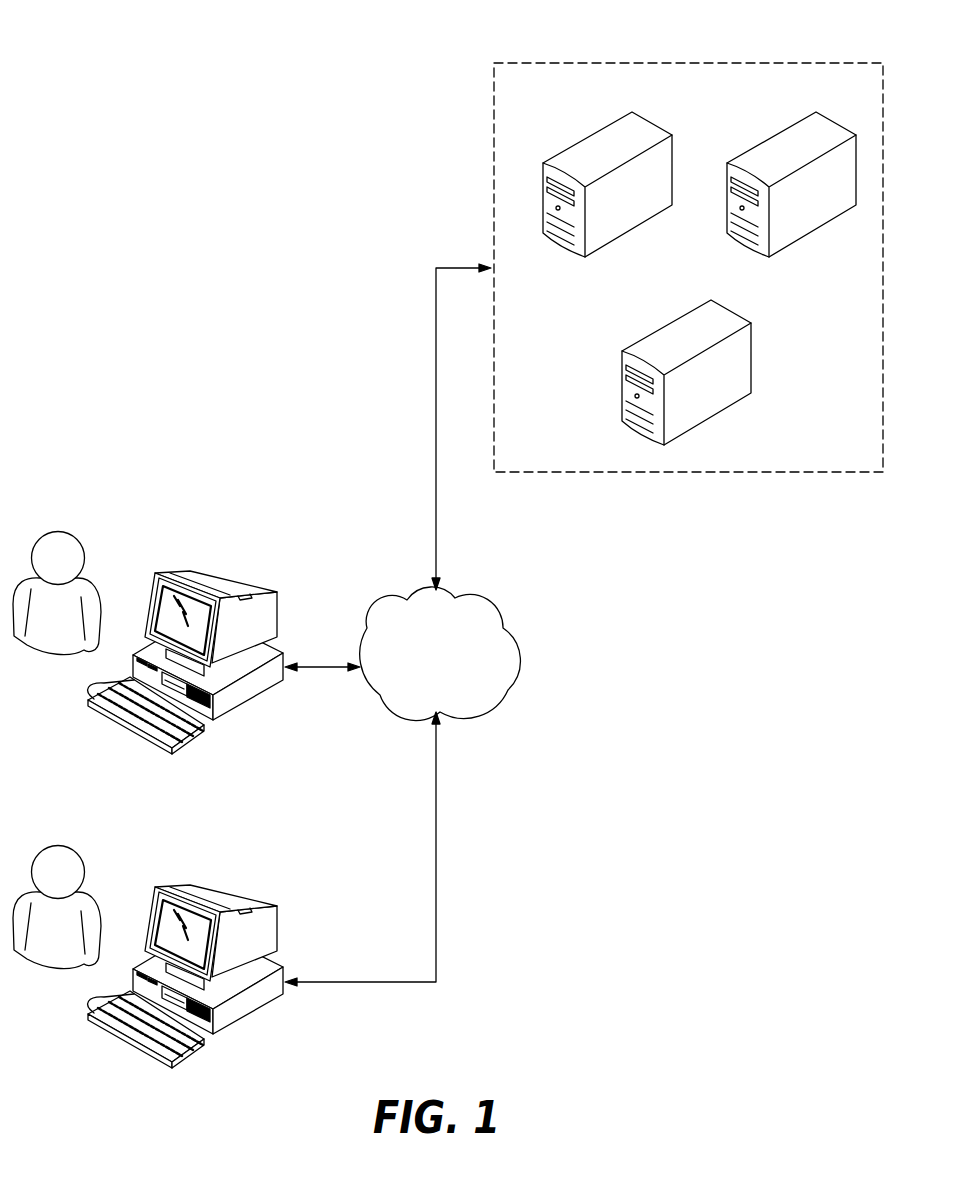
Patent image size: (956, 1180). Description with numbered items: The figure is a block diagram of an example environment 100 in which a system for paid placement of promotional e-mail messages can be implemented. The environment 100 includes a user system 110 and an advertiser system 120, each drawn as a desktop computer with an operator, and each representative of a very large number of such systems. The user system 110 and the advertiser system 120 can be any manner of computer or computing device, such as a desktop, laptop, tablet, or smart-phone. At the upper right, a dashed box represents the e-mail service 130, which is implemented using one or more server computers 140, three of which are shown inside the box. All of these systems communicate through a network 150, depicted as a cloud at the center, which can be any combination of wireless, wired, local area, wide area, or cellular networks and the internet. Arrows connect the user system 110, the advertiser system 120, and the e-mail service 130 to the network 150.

The environment 100 is at (230, 146).
The user system 110 is at (248, 582).
The advertiser system 120 is at (199, 971).
The e-mail service 130 is at (746, 62).
The server computers 140 is at (589, 131).
The network 150 is at (481, 596).